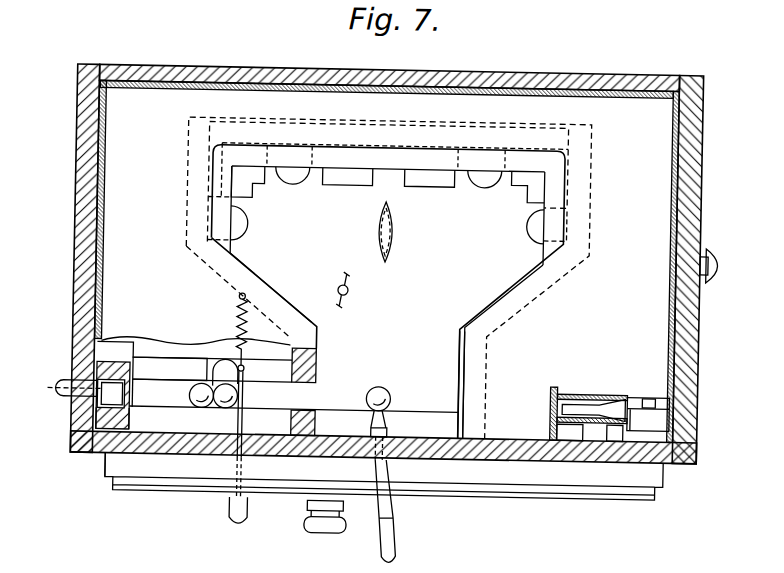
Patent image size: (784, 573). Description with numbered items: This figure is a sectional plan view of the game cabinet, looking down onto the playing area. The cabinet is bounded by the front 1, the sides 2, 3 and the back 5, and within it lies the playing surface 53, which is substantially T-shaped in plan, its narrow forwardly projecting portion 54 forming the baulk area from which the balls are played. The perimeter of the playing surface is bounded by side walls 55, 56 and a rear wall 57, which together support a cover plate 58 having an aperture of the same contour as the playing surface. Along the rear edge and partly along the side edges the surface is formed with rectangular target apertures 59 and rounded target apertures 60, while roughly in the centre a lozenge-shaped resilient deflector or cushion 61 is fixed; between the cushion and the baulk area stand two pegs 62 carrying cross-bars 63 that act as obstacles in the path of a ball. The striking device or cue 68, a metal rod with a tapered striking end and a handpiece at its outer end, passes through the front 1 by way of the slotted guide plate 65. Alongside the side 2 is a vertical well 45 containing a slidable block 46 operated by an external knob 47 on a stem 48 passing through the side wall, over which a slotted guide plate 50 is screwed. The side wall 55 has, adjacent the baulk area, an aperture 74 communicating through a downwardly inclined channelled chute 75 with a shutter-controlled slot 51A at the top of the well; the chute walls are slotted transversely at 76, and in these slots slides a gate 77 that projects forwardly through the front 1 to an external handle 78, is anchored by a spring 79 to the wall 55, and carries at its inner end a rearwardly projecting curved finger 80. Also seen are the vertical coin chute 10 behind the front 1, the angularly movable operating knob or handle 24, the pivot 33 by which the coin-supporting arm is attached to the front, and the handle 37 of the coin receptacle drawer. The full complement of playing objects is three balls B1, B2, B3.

The front 1 is at (526, 434).
The side 2 is at (680, 166).
The side 3 is at (86, 186).
The back 5 is at (554, 75).
The coin chute 10 is at (590, 391).
The operating knob or handle 24 is at (328, 520).
The pivot 33 is at (652, 392).
The handle 37 is at (714, 277).
The vertical well 45 is at (109, 360).
The slidable block 46 is at (100, 434).
The external knob 47 is at (70, 416).
The stem 48 is at (87, 458).
The slotted guide plate 50 is at (100, 388).
The shutter-controlled slot 51A is at (144, 452).
The playing surface 53 is at (500, 271).
The baulk area 54 is at (445, 362).
The side wall 55 is at (186, 252).
The side wall 56 is at (567, 265).
The rear wall 57 is at (414, 120).
The cover plate 58 is at (148, 143).
The target apertures 59 is at (351, 178).
The target apertures 60 is at (295, 177).
The deflector or cushion 61 is at (389, 220).
The pegs 62 is at (348, 289).
The cross-bars 63 is at (348, 306).
The slotted guide plate 65 is at (527, 490).
The striking device or cue 68 is at (399, 545).
The aperture 74 is at (307, 394).
The chute 75 is at (213, 343).
The transverse slots 76 is at (234, 461).
The gate 77 is at (303, 396).
The handle 78 is at (248, 531).
The spring 79 is at (233, 310).
The curved finger 80 is at (229, 362).
The ball B1 is at (392, 395).
The ball B2 is at (226, 411).
The ball B3 is at (192, 401).